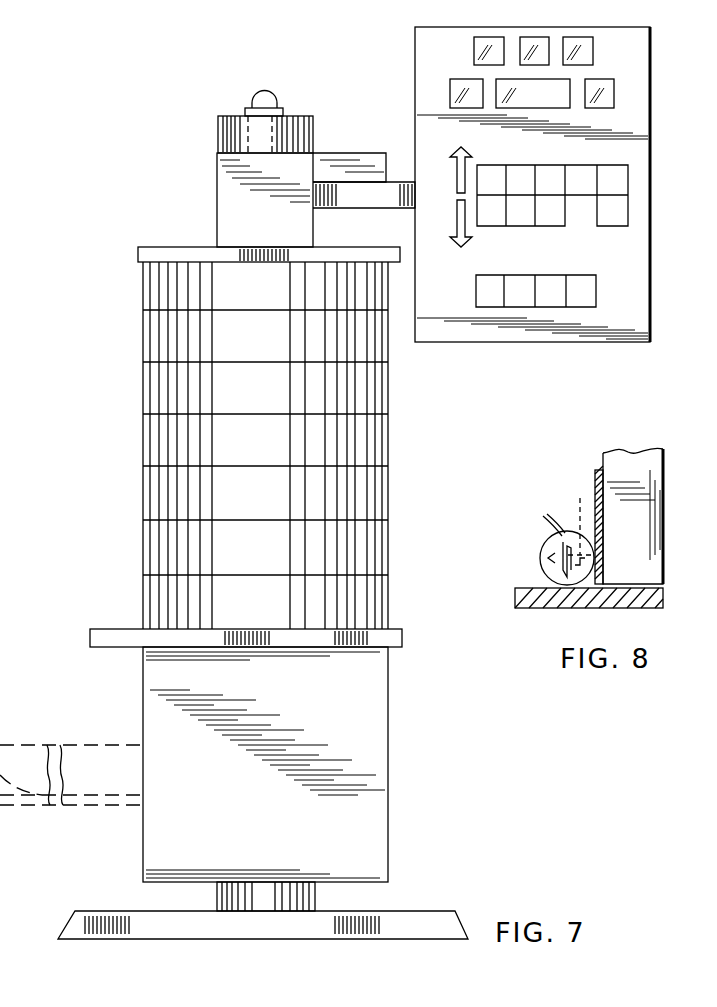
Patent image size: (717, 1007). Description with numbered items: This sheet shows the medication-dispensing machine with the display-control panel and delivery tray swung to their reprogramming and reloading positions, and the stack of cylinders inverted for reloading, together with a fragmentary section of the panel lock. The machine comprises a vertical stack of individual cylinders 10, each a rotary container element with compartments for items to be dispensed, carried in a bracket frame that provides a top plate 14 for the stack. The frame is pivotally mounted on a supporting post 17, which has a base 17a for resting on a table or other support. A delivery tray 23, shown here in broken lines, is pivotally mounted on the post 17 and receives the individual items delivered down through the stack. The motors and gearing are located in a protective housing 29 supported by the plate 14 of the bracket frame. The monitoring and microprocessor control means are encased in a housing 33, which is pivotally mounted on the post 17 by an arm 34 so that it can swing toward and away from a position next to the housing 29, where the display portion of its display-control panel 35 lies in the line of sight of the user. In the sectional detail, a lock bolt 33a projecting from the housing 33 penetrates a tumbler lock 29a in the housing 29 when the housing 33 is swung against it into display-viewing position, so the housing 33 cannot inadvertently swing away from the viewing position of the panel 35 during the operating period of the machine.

In FIG. 7, the cylinder 10 is at (143, 347).
In FIG. 7, the top plate 14 is at (138, 256).
In FIG. 8, the top plate 14 is at (523, 609).
In FIG. 7, the supporting post 17 is at (231, 116).
In FIG. 7, the base 17a is at (441, 911).
In FIG. 7, the delivery tray 23 is at (43, 745).
In FIG. 7, the protective housing 29 is at (388, 793).
In FIG. 8, the protective housing 29 is at (595, 482).
In FIG. 8, the tumbler lock 29a is at (540, 565).
In FIG. 7, the housing 33 is at (652, 42).
In FIG. 8, the housing 33 is at (662, 468).
In FIG. 8, the lock bolt 33a is at (580, 497).
In FIG. 7, the arm 34 is at (355, 153).
In FIG. 7, the display-control panel 35 is at (636, 132).
In FIG. 8, the display-control panel 35 is at (598, 456).